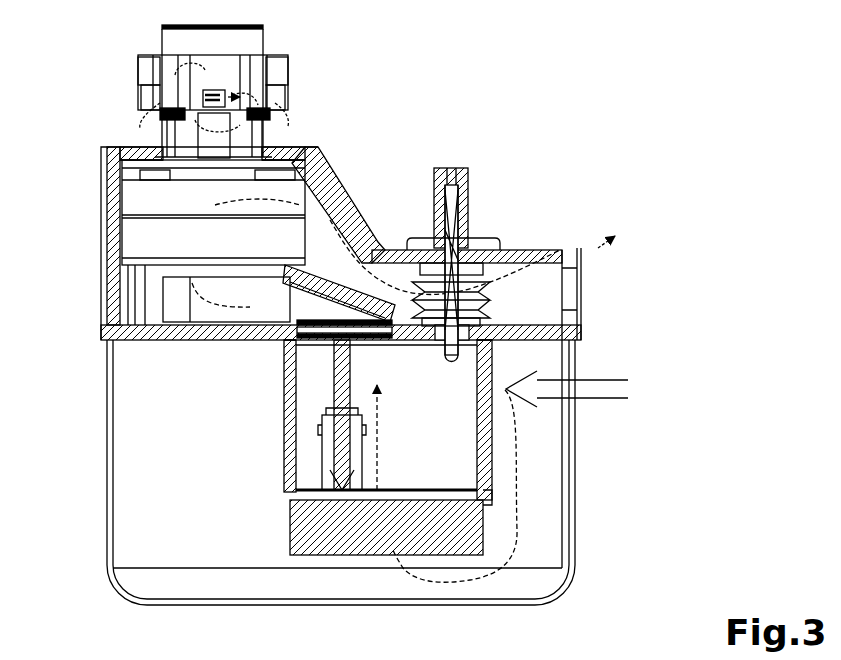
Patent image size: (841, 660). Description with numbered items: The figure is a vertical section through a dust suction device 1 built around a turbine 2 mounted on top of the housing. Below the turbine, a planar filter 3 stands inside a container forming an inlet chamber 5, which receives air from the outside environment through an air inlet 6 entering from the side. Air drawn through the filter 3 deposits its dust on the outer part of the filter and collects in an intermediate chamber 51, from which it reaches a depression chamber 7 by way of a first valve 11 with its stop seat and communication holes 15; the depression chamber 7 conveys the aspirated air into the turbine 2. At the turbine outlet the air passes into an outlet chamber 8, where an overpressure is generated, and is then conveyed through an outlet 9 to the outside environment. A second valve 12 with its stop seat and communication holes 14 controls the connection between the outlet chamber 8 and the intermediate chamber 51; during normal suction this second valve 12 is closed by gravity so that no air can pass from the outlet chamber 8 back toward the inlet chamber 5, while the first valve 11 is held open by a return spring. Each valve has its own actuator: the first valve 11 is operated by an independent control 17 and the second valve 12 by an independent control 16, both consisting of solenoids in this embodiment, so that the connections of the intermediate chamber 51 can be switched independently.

The dust suction device 1 is at (76, 80).
The turbine 2 is at (252, 45).
The planar filter 3 is at (468, 555).
The inlet chamber 5 is at (222, 517).
The air inlet 6 is at (576, 400).
The depression chamber 7 is at (195, 312).
The outlet chamber 8 is at (343, 207).
The outlet 9 is at (572, 296).
The first valve 11 is at (300, 300).
The second valve 12 is at (490, 330).
The communication holes 14 is at (500, 357).
The communication holes 15 is at (328, 462).
The independent control 16 is at (470, 205).
The independent control 17 is at (283, 360).
The intermediate chamber 51 is at (386, 382).